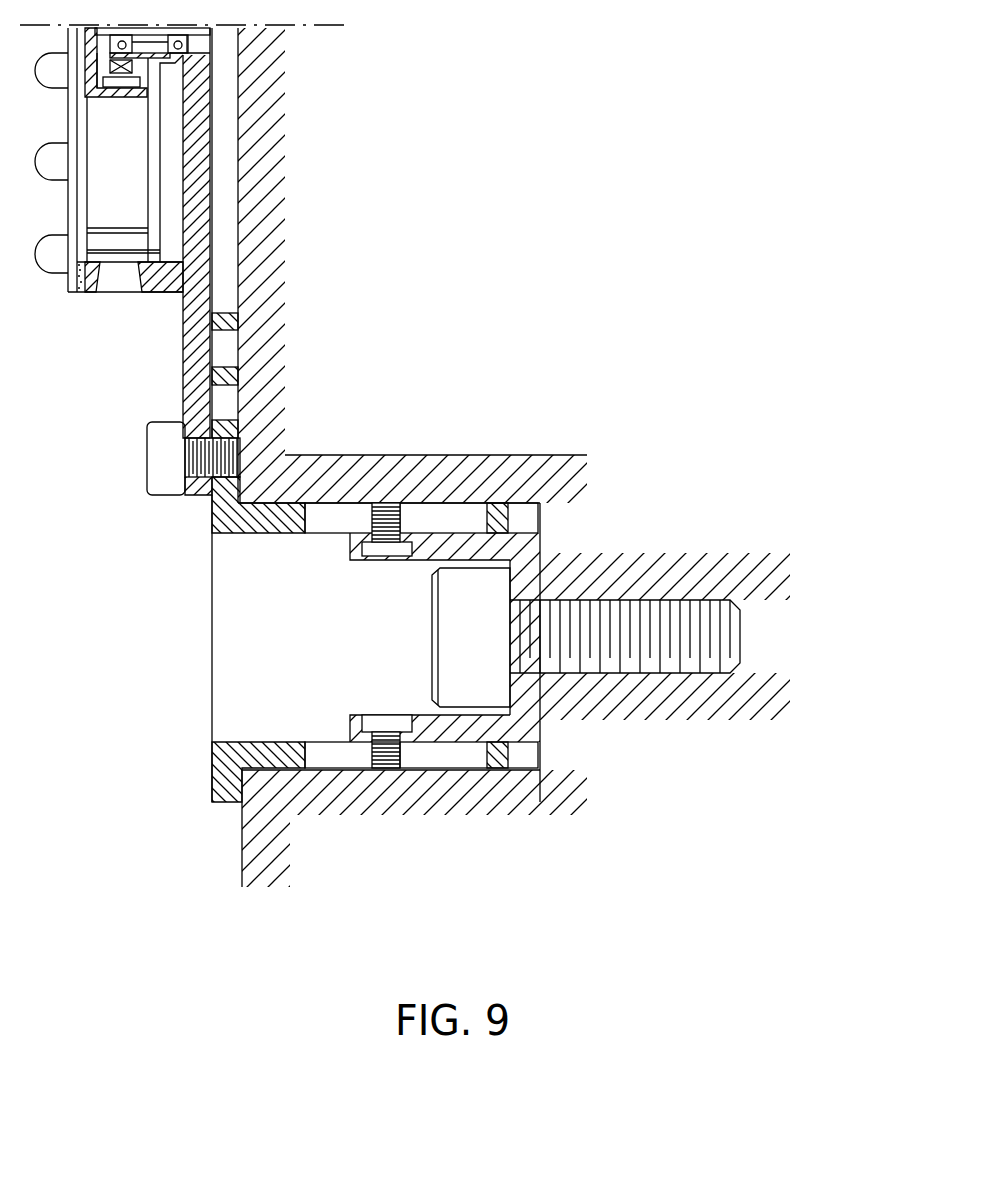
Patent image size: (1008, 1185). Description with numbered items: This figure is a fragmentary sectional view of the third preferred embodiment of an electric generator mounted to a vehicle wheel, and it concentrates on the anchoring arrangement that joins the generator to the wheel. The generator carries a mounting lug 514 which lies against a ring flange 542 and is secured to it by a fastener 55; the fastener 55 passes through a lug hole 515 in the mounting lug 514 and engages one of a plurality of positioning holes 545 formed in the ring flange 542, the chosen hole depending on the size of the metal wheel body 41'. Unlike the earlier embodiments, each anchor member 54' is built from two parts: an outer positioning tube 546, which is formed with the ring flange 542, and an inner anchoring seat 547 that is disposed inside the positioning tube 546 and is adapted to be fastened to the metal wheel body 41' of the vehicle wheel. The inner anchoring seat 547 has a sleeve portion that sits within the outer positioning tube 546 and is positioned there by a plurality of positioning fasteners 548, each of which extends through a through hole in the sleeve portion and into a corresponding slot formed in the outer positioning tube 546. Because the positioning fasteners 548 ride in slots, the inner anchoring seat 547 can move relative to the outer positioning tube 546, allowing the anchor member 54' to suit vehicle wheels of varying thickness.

The mounting lug 514 is at (186, 340).
The ring flange 542 is at (244, 298).
The fastener 55 is at (155, 440).
The lug hole 515 is at (185, 472).
The positioning holes 545 is at (213, 477).
The anchor member 54' is at (446, 648).
The inner anchoring seat 547 is at (348, 547).
The outer positioning tube 546 is at (270, 742).
The positioning fasteners 548 is at (387, 715).
The metal wheel body 41' is at (370, 839).